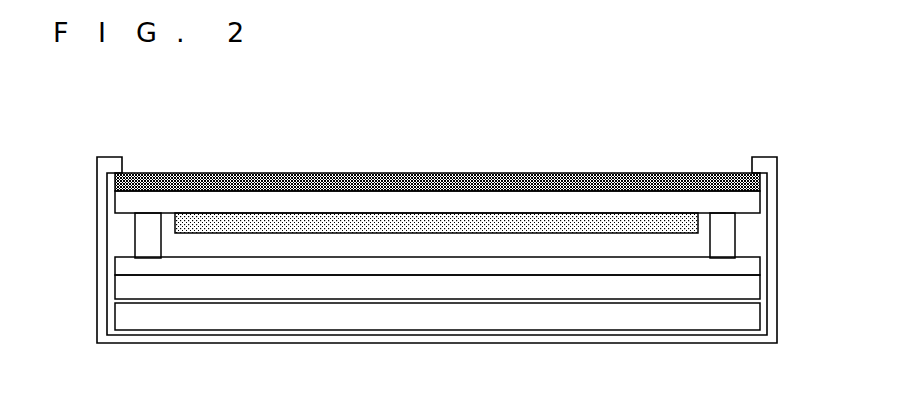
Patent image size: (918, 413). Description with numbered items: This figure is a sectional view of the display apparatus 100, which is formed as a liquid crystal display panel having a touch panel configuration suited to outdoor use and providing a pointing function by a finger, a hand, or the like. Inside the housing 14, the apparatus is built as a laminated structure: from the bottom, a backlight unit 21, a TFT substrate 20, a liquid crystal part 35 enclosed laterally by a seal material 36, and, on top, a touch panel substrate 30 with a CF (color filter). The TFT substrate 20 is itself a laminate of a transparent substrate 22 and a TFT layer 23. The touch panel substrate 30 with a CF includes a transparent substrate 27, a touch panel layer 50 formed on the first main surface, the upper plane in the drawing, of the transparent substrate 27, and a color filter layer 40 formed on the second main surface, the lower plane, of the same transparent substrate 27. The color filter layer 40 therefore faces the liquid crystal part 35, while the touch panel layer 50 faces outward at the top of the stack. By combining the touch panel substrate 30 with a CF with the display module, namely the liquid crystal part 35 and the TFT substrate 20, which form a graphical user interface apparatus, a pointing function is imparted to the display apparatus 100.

The display apparatus 100 is at (433, 250).
The housing 14 is at (383, 338).
The TFT substrate 20 is at (400, 328).
The backlight unit 21 is at (268, 318).
The transparent substrate 22 is at (500, 282).
The TFT layer 23 is at (615, 263).
The transparent substrate 27 is at (750, 203).
The touch panel substrate with a CF 30 is at (433, 188).
The liquid crystal part 35 is at (230, 247).
The seal material 36 is at (153, 228).
The color filter layer 40 is at (508, 223).
The touch panel layer 50 is at (363, 173).